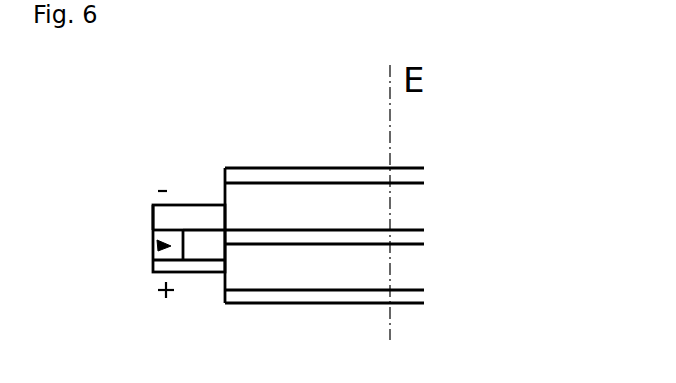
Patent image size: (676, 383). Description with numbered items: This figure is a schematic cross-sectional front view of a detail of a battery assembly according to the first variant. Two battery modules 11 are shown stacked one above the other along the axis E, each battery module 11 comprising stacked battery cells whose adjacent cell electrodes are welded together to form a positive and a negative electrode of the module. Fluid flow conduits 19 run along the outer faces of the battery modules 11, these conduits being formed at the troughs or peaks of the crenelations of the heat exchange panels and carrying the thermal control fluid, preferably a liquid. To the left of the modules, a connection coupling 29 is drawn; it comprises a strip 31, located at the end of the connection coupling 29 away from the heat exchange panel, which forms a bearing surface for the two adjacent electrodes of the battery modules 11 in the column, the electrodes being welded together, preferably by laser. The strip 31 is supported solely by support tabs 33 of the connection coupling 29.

The battery module 11 is at (303, 242).
The fluid flow conduit 19 is at (283, 238).
The connection coupling 29 is at (208, 224).
The strip 31 is at (152, 218).
The support tab 33 is at (155, 247).